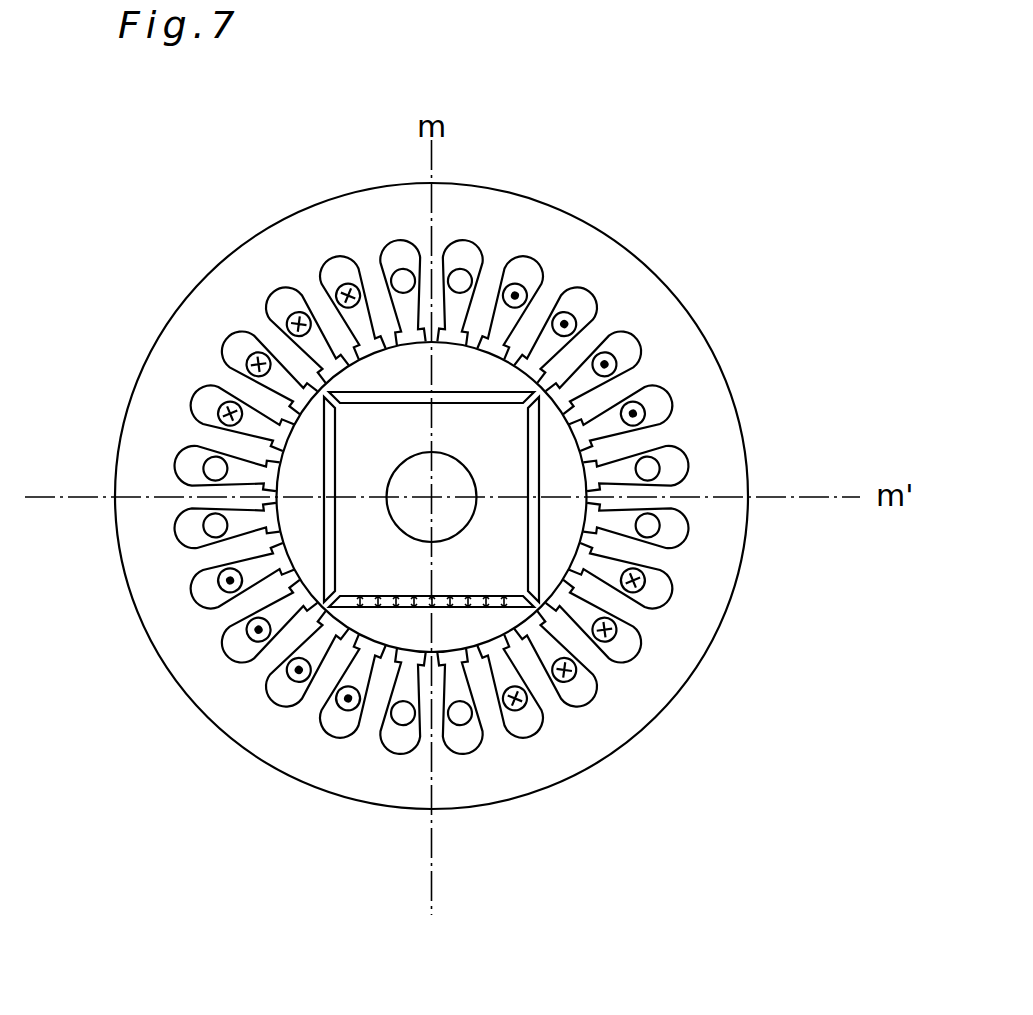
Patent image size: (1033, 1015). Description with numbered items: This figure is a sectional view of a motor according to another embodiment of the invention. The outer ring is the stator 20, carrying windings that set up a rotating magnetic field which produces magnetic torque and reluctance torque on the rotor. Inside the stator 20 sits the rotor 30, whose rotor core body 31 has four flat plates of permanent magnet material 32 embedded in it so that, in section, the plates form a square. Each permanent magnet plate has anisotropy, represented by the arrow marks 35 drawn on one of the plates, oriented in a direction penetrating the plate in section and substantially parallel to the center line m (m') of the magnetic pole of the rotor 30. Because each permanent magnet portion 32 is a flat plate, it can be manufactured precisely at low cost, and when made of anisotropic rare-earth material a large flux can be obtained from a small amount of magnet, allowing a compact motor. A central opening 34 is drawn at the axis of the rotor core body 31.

The stator 20 is at (678, 300).
The rotor 30 is at (578, 467).
The rotor core body 31 is at (565, 533).
The permanent magnet material 32 is at (530, 575).
The rotor shaft 34 is at (420, 542).
The arrow marks 35 is at (480, 608).